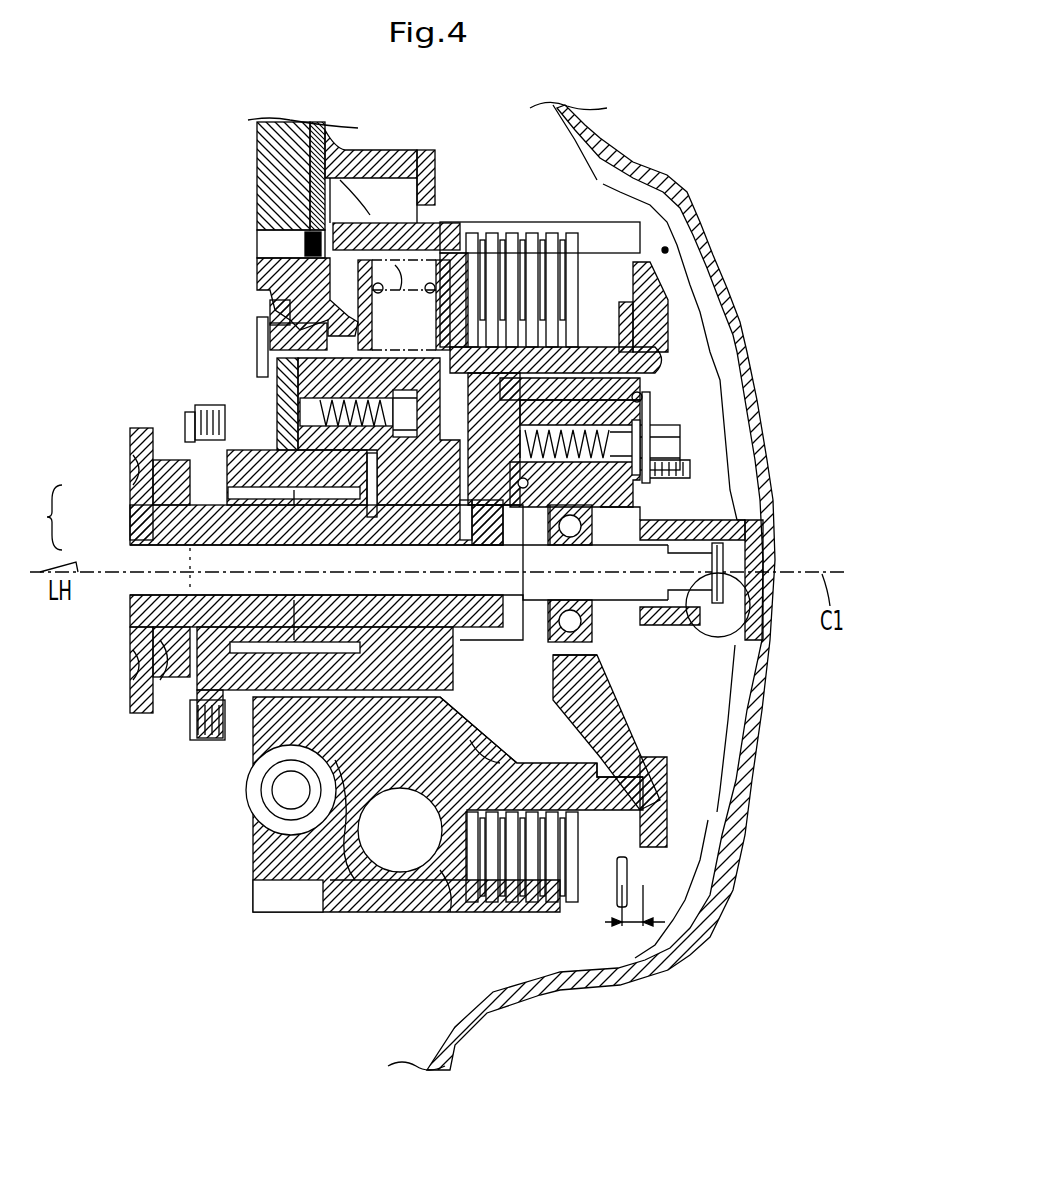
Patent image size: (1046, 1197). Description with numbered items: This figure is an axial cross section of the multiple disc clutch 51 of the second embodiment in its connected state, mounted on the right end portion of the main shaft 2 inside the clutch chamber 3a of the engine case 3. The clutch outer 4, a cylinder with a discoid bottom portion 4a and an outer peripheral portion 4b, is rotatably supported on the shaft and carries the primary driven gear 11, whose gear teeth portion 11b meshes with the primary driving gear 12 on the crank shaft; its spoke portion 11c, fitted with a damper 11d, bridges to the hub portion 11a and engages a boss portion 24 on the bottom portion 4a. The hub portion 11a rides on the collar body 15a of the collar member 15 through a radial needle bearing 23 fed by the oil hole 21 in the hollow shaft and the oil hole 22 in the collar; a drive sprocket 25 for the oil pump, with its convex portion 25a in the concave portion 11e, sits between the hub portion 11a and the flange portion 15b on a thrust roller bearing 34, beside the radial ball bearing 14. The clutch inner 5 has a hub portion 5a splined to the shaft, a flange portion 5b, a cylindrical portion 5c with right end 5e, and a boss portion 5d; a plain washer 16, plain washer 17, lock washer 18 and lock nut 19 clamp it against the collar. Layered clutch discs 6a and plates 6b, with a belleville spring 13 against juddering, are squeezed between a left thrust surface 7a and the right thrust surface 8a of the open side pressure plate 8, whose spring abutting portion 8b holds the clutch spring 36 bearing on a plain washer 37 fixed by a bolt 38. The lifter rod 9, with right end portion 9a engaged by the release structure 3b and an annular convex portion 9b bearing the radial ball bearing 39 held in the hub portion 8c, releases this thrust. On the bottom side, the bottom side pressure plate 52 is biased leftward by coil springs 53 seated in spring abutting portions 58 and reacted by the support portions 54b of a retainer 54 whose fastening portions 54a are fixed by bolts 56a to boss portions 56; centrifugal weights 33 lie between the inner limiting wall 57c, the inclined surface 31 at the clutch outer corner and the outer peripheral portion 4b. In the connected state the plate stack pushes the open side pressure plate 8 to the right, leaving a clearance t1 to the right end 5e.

The main shaft 2 is at (152, 610).
The engine case 3 is at (690, 178).
The clutch chamber 3a is at (665, 250).
The release structure 3b is at (752, 627).
The clutch outer 4 is at (478, 218).
The bottom portion 4a is at (305, 355).
The outer peripheral portion 4b is at (440, 208).
The clutch inner 5 is at (592, 753).
The hub portion 5a is at (420, 628).
The flange portion 5b is at (500, 763).
The cylindrical portion 5c is at (625, 783).
The boss portion 5d is at (645, 487).
The right end of the cylinder portion 5e is at (650, 345).
The clutch disc 6a is at (583, 240).
The clutch plate 6b is at (548, 237).
The left thrust surface 7a is at (487, 883).
The open side pressure plate 8 is at (662, 840).
The right thrust surface 8a is at (618, 858).
The spring abutting portion 8b is at (645, 396).
The hub portion 8c is at (615, 505).
The lifter rod 9 is at (685, 545).
The right end portion 9a is at (735, 562).
The annular convex portion 9b is at (540, 615).
The primary driven gear 11 is at (253, 270).
The hub portion 11a is at (250, 455).
The gear teeth portion 11b is at (255, 262).
The spoke portion 11c is at (245, 365).
The damper 11d is at (260, 792).
The concave portion 11e is at (205, 460).
The primary driving gear 12 is at (263, 158).
The belleville spring 13 is at (633, 317).
The radial ball bearing 14 is at (132, 427).
The collar member 15 is at (40, 517).
The collar body 15a is at (187, 543).
The flange portion 15b is at (165, 495).
The plain washer 16 is at (302, 440).
The plain washer 17 is at (457, 522).
The lock washer 18 is at (468, 527).
The lock nut 19 is at (483, 520).
The oil hole 21 is at (293, 540).
The oil hole 22 is at (273, 540).
The radial needle bearing 23 is at (187, 538).
The boss portion 24 is at (283, 317).
The drive sprocket 25 is at (193, 693).
The convex portion 25a is at (198, 405).
The inclined surface 31 is at (382, 850).
The centrifugal weight 33 is at (393, 867).
The thrust roller bearing 34 is at (170, 663).
The clutch spring 36 is at (670, 463).
The plain washer 37 is at (672, 442).
The bolt 38 is at (668, 432).
The radial ball bearing 39 is at (592, 645).
The multiple disc clutch 51 is at (705, 375).
The bottom side pressure plate 52 is at (450, 880).
The nip and compression coil spring 53 is at (407, 255).
The retainer 54 is at (462, 745).
The fastening portion 54a is at (425, 382).
The support portion 54b is at (408, 290).
The boss portion 56 is at (382, 354).
The bolt 56a is at (415, 426).
The inner limiting wall 57c is at (263, 907).
The spring abutting portion 58 is at (387, 262).
The clearance t1 is at (635, 924).